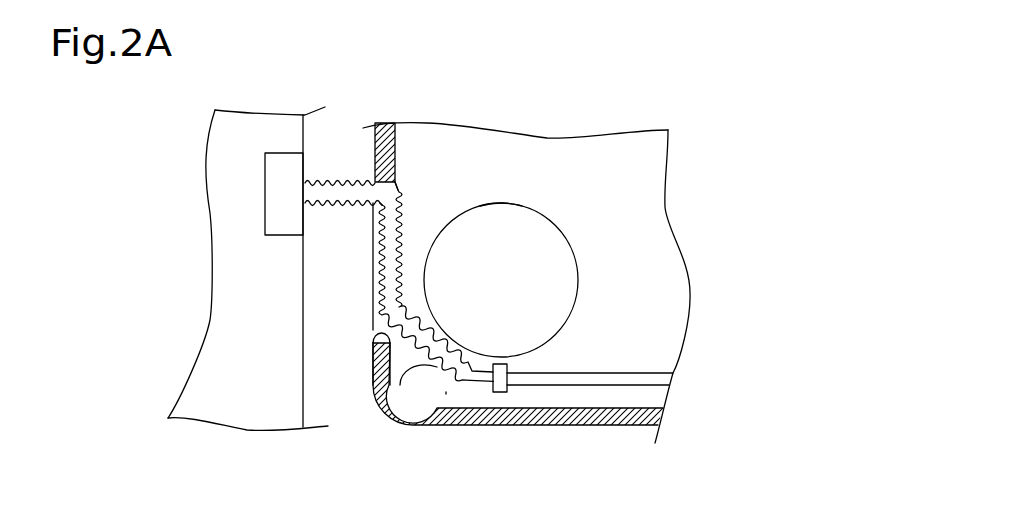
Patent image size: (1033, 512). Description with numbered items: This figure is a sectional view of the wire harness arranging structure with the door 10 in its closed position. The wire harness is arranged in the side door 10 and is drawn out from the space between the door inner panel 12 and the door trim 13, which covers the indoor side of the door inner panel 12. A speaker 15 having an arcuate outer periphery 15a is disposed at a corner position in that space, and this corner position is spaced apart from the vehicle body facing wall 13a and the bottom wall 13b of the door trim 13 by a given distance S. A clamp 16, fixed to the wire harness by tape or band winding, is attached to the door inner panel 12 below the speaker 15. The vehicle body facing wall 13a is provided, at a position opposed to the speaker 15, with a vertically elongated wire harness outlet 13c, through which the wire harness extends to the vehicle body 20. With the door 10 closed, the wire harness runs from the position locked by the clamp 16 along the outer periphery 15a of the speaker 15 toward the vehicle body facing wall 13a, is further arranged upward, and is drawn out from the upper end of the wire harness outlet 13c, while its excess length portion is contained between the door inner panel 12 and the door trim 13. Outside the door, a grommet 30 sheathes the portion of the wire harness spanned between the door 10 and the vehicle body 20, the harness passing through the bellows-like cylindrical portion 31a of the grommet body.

The side door 10 is at (533, 124).
The door inner panel 12 is at (657, 242).
The door trim 13 is at (607, 427).
The vehicle body facing wall 13a is at (375, 167).
The bottom wall 13b is at (548, 425).
The wire harness outlet 13c is at (368, 330).
The speaker 15 is at (565, 287).
The arcuate outer periphery 15a is at (503, 205).
The clamp 16 is at (503, 393).
The vehicle body 20 is at (272, 110).
The grommet 30 is at (268, 212).
The bellows-like cylindrical portion 31a is at (400, 385).
The given distance S is at (446, 392).